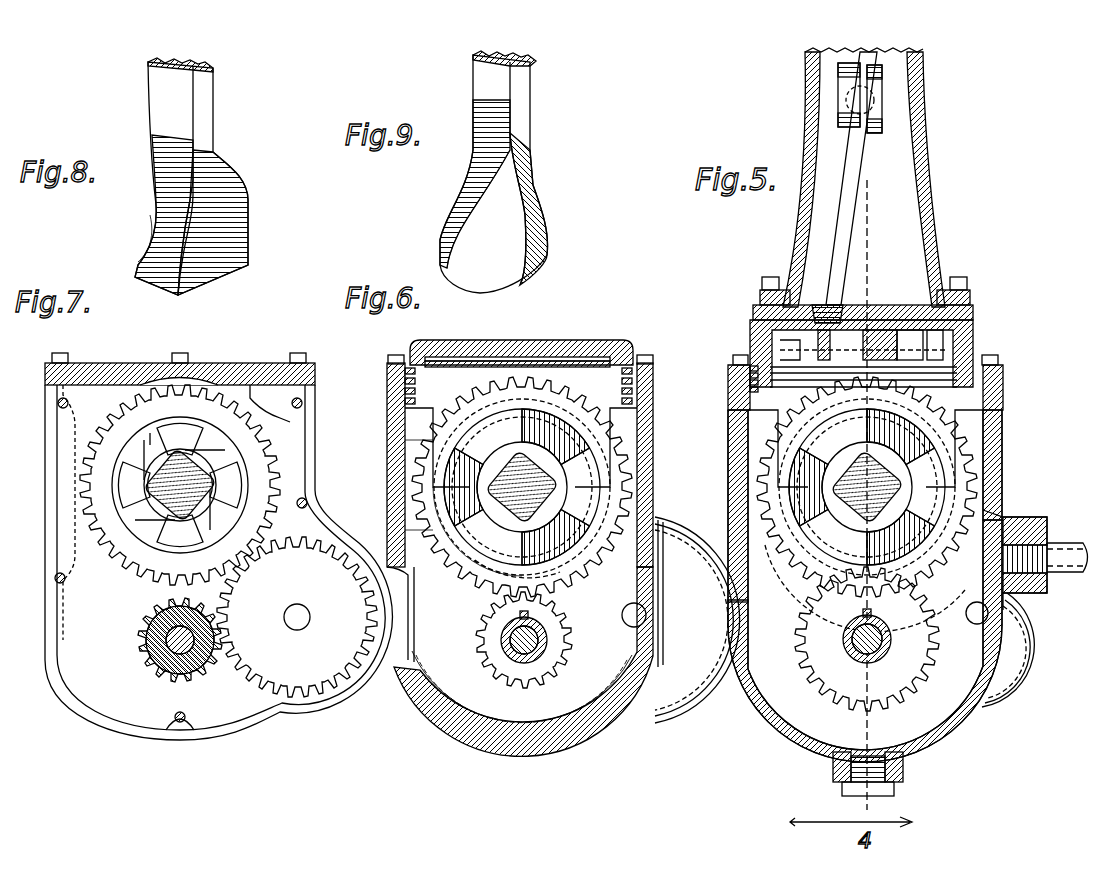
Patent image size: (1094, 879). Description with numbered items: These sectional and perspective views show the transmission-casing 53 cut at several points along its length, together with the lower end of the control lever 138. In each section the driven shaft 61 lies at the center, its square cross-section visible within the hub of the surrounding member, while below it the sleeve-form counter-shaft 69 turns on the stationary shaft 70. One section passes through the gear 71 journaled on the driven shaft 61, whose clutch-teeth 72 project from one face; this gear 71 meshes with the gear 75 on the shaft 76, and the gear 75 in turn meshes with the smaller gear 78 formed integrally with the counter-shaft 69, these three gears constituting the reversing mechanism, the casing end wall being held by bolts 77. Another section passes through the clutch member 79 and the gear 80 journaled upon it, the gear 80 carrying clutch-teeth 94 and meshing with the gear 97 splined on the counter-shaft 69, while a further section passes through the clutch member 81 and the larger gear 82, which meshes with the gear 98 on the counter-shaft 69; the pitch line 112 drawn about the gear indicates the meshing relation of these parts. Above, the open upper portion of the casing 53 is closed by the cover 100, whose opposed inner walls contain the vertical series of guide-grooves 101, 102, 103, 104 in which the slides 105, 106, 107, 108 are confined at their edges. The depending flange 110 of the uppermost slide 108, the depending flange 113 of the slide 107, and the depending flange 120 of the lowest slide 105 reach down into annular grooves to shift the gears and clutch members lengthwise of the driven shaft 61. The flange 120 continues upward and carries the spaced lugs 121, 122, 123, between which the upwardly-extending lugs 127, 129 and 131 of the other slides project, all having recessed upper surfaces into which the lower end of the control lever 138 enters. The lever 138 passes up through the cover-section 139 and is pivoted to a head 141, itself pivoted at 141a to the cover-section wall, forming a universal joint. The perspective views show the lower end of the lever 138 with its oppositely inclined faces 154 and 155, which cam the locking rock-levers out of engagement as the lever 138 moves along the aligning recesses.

In FIG. 6, the transmission-casing 53 is at (590, 728).
In FIG. 5, the transmission-casing 53 is at (952, 728).
In FIG. 7, the driven shaft 61 is at (198, 458).
In FIG. 6, the driven shaft 61 is at (540, 528).
In FIG. 5, the driven shaft 61 is at (905, 493).
In FIG. 6, the counter-shaft 69 is at (500, 638).
In FIG. 5, the counter-shaft 69 is at (886, 652).
In FIG. 7, the stationary shaft 70 is at (172, 648).
In FIG. 6, the stationary shaft 70 is at (508, 644).
In FIG. 5, the stationary shaft 70 is at (882, 640).
In FIG. 7, the gear 71 is at (97, 463).
In FIG. 7, the clutch-teeth 72 is at (165, 440).
In FIG. 7, the gear 75 is at (340, 552).
In FIG. 7, the shaft 76 is at (299, 615).
In FIG. 6, the shaft 76 is at (624, 620).
In FIG. 5, the shaft 76 is at (972, 610).
In FIG. 7, the bolts 77 is at (58, 404).
In FIG. 7, the gear 78 is at (142, 645).
In FIG. 6, the clutch member 79 is at (492, 462).
In FIG. 6, the gear 80 is at (560, 454).
In FIG. 5, the clutch member 81 is at (840, 460).
In FIG. 5, the gear 82 is at (905, 452).
In FIG. 6, the clutch-teeth 94 is at (480, 540).
In FIG. 6, the gear 97 is at (550, 655).
In FIG. 5, the gear 98 is at (897, 680).
In FIG. 7, the cover 100 is at (125, 378).
In FIG. 6, the cover 100 is at (525, 350).
In FIG. 6, the guide-groove 101 is at (405, 404).
In FIG. 5, the guide-groove 101 is at (754, 389).
In FIG. 6, the guide-groove 102 is at (404, 392).
In FIG. 5, the guide-groove 102 is at (752, 381).
In FIG. 6, the guide-groove 103 is at (404, 381).
In FIG. 5, the guide-groove 103 is at (751, 374).
In FIG. 6, the guide-groove 104 is at (403, 369).
In FIG. 5, the guide-groove 104 is at (749, 366).
In FIG. 5, the slide 105 is at (990, 378).
In FIG. 5, the slide 106 is at (975, 360).
In FIG. 5, the slide 107 is at (962, 348).
In FIG. 6, the slide 108 is at (450, 365).
In FIG. 5, the slide 108 is at (960, 328).
In FIG. 6, the depending flange 110 is at (430, 452).
In FIG. 6, the pitch circle 112 is at (550, 588).
In FIG. 6, the depending flange 113 is at (555, 556).
In FIG. 5, the depending flange 113 is at (942, 447).
In FIG. 5, the depending flange 120 is at (942, 472).
In FIG. 5, the lug 121 is at (970, 298).
In FIG. 5, the lug 122 is at (880, 328).
In FIG. 5, the lug 123 is at (800, 292).
In FIG. 5, the lug 127 is at (908, 330).
In FIG. 5, the lug 129 is at (852, 328).
In FIG. 5, the lug 131 is at (790, 338).
In FIG. 8, the control lever 138 is at (205, 139).
In FIG. 9, the control lever 138 is at (520, 127).
In FIG. 5, the control lever 138 is at (860, 152).
In FIG. 5, the cover-section 139 is at (807, 86).
In FIG. 5, the head 141 is at (882, 96).
In FIG. 5, the pivot 141a is at (845, 103).
In FIG. 8, the inclined face 154 is at (148, 250).
In FIG. 9, the inclined face 154 is at (540, 240).
In FIG. 9, the inclined face 155 is at (478, 209).